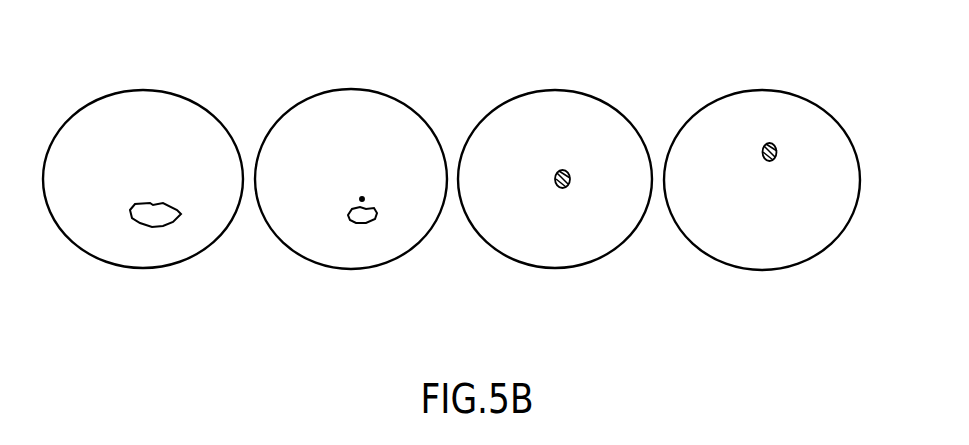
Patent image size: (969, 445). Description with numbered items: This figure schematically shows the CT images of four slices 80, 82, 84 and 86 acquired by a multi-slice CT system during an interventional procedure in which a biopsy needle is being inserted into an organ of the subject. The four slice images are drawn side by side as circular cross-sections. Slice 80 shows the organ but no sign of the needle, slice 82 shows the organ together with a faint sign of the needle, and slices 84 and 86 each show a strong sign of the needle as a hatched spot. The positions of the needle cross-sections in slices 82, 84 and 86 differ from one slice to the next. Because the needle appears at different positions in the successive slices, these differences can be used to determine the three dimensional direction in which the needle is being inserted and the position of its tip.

The slice 80 is at (152, 89).
The slice 82 is at (367, 90).
The slice 84 is at (565, 90).
The slice 86 is at (700, 108).